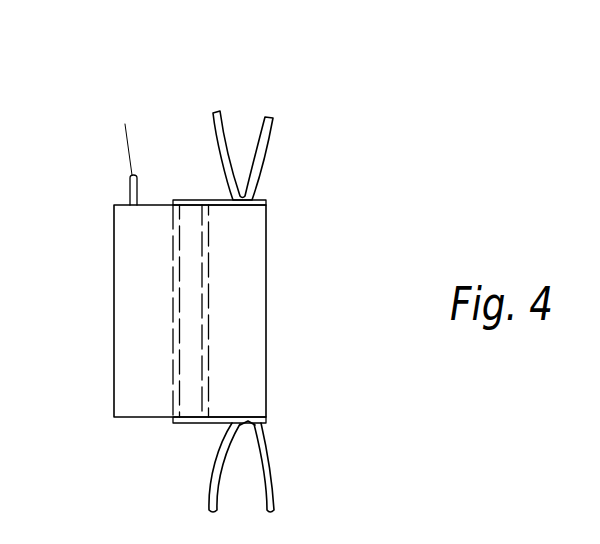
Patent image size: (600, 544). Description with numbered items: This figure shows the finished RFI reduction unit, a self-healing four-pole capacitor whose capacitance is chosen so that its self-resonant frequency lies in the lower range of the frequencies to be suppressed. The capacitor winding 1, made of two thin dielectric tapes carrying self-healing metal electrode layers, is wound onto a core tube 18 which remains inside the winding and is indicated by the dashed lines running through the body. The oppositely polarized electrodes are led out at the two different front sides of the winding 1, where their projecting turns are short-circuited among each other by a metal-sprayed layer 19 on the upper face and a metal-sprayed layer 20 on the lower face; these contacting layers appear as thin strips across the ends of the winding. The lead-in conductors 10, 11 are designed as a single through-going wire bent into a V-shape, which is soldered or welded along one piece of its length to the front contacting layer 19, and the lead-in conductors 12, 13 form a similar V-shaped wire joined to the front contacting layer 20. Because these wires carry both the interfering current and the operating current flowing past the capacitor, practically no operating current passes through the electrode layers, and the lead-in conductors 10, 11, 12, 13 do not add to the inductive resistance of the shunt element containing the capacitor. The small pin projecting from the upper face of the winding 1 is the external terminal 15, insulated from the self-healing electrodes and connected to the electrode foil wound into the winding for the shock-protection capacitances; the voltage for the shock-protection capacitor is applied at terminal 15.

The capacitor winding 1 is at (133, 353).
The lead-in conductor 10 is at (223, 123).
The lead-in conductor 11 is at (259, 164).
The lead-in conductor 12 is at (180, 478).
The lead-in conductor 13 is at (270, 472).
The external terminal 15 is at (130, 180).
The core tube 18 is at (142, 274).
The metal-sprayed layer 19 is at (267, 200).
The metal-sprayed layer 20 is at (263, 420).